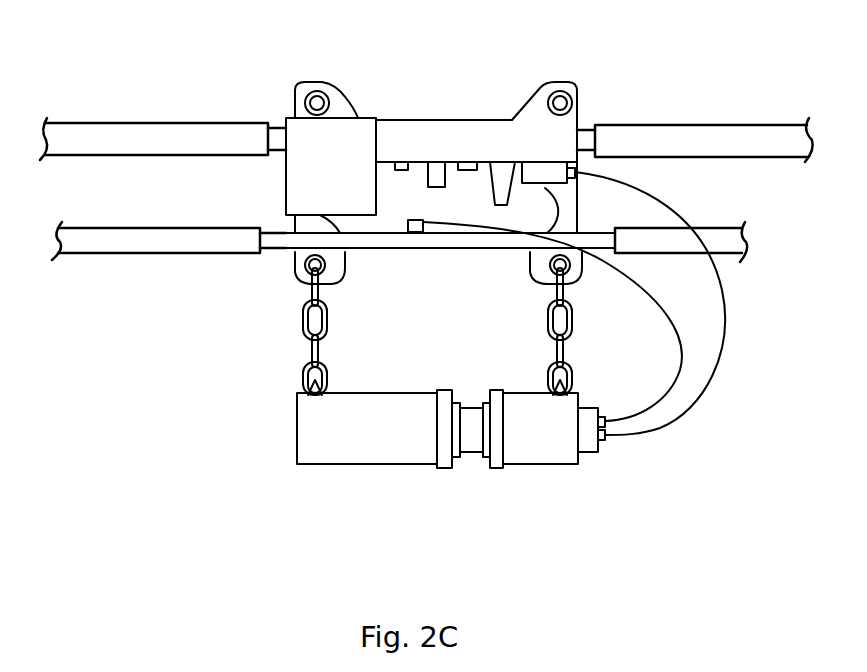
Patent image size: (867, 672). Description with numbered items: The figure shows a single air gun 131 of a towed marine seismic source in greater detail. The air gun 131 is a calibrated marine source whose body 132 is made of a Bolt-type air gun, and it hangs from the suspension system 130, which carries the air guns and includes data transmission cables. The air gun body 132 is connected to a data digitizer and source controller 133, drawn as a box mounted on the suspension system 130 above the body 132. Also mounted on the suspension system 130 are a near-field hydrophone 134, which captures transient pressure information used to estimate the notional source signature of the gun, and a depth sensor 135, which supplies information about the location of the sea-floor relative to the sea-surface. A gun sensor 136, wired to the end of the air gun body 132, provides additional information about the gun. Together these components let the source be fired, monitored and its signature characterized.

The suspension system 130 is at (137, 123).
The air gun 131 is at (347, 533).
The body 132 is at (408, 465).
The data digitizer and source controller 133 is at (362, 193).
The near-field hydrophone 134 is at (430, 166).
The depth sensor 135 is at (402, 170).
The gun sensor 136 is at (602, 453).